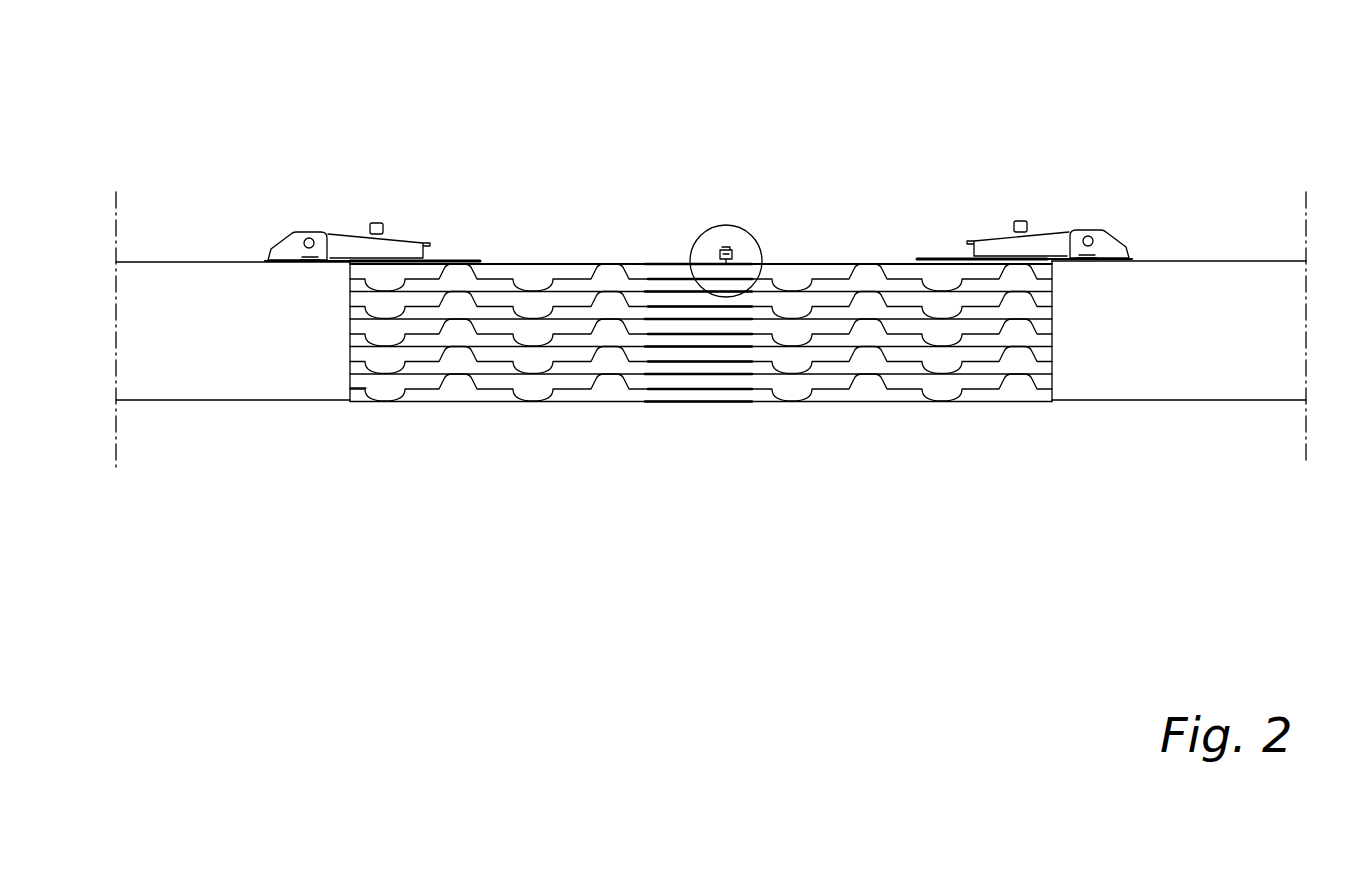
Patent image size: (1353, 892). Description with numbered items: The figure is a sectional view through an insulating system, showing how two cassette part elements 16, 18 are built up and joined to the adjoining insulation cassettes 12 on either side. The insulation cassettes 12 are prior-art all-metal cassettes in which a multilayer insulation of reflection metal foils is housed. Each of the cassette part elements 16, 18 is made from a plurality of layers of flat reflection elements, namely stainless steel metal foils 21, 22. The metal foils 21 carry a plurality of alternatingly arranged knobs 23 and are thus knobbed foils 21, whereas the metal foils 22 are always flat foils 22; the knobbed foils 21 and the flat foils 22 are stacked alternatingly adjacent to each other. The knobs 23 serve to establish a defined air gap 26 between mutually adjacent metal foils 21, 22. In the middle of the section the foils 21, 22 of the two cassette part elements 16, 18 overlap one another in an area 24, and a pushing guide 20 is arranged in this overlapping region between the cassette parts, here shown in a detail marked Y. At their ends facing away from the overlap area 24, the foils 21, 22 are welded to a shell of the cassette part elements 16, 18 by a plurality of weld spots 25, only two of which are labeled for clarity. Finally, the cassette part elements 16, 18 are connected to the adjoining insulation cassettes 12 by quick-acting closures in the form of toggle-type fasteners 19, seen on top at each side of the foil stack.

The insulation cassette 12 is at (254, 339).
The cassette part element 16 is at (1023, 148).
The cassette part element 18 is at (372, 151).
The toggle-type fastener 19 is at (357, 245).
The pushing guide 20 is at (722, 247).
The knobbed foil 21 is at (553, 278).
The flat foil 22 is at (597, 287).
The knob 23 is at (617, 377).
The overlap area 24 is at (701, 316).
The weld spot 25 is at (352, 390).
The air gap 26 is at (815, 313).